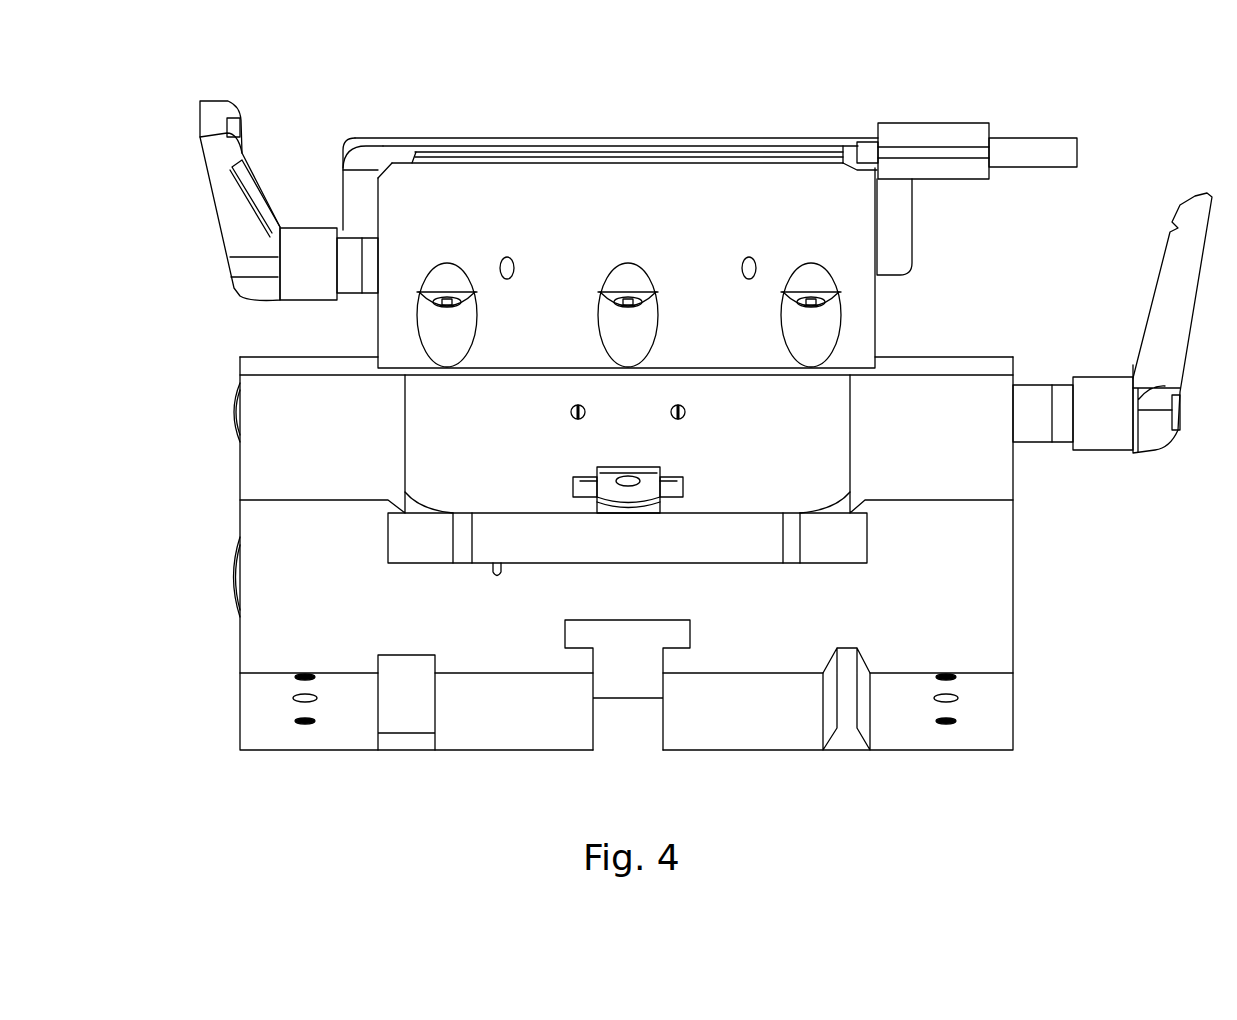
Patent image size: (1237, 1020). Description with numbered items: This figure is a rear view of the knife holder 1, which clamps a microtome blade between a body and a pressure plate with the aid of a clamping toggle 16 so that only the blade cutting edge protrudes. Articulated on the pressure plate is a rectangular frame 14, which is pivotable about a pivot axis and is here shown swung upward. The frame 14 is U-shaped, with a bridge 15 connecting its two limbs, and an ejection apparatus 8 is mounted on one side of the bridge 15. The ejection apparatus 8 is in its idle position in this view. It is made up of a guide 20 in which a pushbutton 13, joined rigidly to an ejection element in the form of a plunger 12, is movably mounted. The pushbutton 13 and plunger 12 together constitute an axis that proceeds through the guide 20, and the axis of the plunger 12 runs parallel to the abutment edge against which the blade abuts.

The knife holder 1 is at (662, 98).
The ejection apparatus 8 is at (926, 102).
The plunger 12 is at (843, 135).
The pushbutton 13 is at (1023, 152).
The rectangular frame 14 is at (893, 257).
The bridge 15 is at (380, 150).
The clamping toggle 16 is at (231, 207).
The guide 20 is at (935, 168).